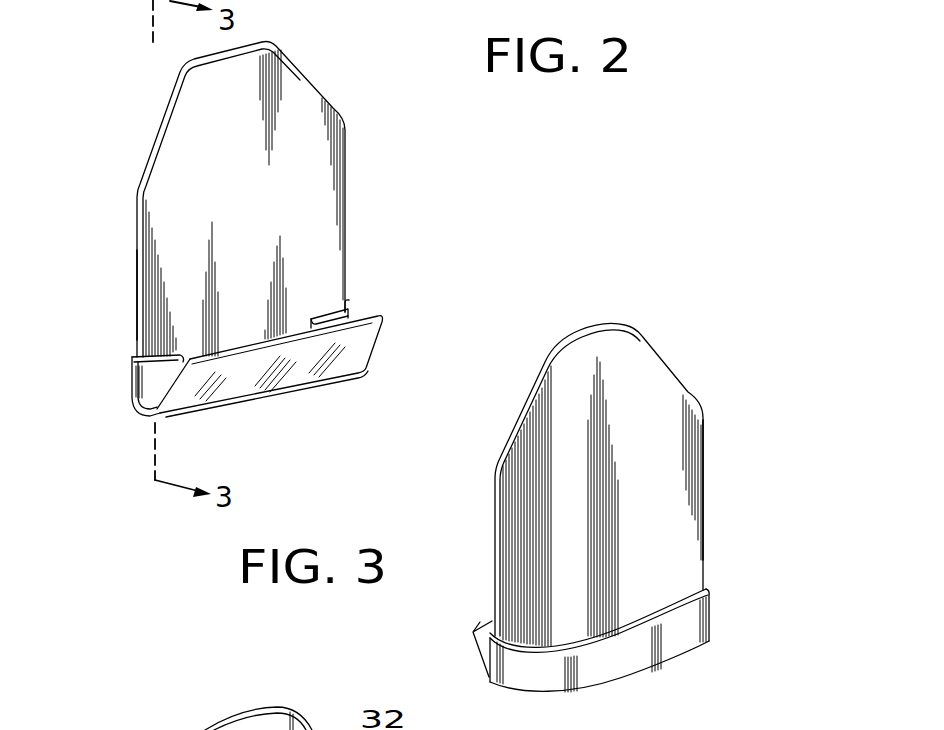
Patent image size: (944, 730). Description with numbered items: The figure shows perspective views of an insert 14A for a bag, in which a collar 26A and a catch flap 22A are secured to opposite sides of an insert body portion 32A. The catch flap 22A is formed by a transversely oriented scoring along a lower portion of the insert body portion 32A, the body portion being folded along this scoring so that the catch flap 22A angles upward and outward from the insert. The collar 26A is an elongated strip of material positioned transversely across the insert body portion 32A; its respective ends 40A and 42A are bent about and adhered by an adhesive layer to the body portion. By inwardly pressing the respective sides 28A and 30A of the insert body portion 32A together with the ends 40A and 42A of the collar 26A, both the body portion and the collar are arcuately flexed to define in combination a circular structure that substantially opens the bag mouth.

In FIG. 2, the insert 14A is at (251, 186).
In FIG. 3, the insert 14A is at (611, 446).
In FIG. 2, the catch flap 22A is at (268, 343).
In FIG. 3, the catch flap 22A is at (587, 629).
In FIG. 3, the collar 26A is at (680, 628).
In FIG. 2, the side of insert body portion 28A is at (138, 253).
In FIG. 3, the side of insert body portion 28A is at (702, 416).
In FIG. 2, the side of insert body portion 30A is at (344, 194).
In FIG. 3, the side of insert body portion 30A is at (495, 468).
In FIG. 2, the insert body portion 32A is at (324, 154).
In FIG. 3, the insert body portion 32A is at (640, 500).
In FIG. 2, the end of collar 40A is at (150, 381).
In FIG. 2, the end of collar 42A is at (330, 315).